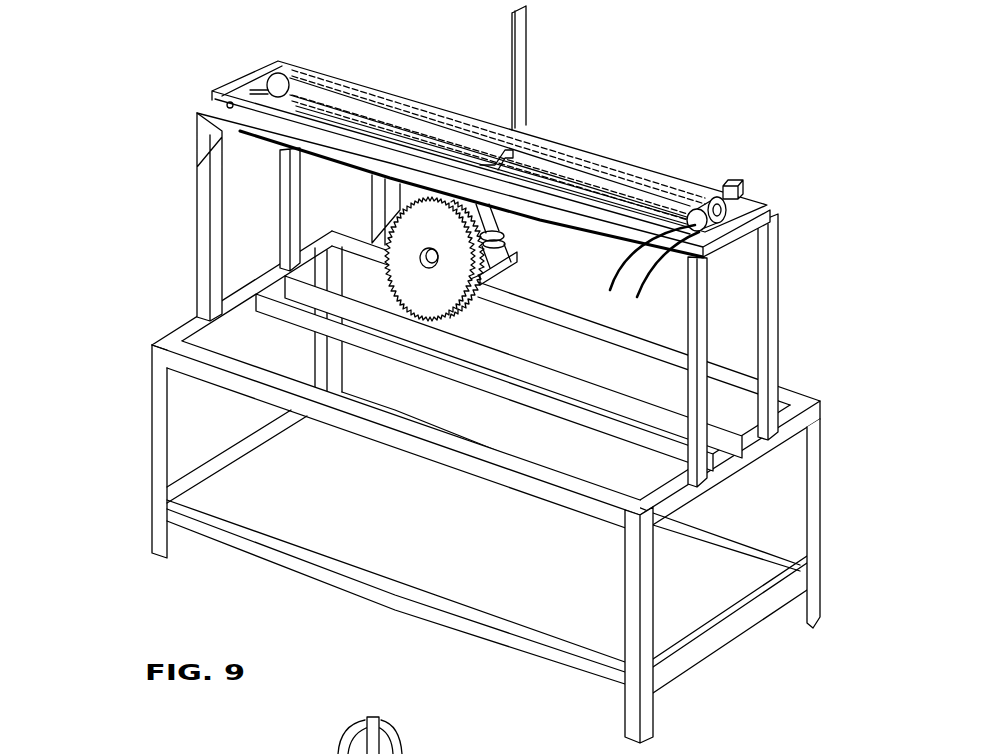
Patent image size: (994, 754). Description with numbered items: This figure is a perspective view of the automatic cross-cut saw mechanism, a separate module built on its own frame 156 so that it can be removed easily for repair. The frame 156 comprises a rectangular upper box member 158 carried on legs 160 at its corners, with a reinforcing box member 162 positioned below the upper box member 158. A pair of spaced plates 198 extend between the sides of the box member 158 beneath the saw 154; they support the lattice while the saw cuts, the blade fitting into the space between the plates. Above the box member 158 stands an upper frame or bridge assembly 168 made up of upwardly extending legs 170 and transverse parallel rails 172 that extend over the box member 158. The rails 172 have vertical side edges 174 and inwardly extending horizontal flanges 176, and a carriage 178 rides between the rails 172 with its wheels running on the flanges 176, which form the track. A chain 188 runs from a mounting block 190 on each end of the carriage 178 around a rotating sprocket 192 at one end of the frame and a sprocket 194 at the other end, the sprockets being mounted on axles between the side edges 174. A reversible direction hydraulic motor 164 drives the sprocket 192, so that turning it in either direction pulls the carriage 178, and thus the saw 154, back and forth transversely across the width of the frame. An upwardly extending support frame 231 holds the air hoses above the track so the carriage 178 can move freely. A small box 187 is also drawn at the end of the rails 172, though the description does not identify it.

The saw blade 154 is at (425, 292).
The lower table frame 156 is at (152, 423).
The front rail 158 is at (407, 442).
The table legs 160 is at (817, 488).
The shelf side rail 162 is at (735, 633).
The top bar of upper frame 164 is at (773, 212).
The upper frame 168 is at (783, 263).
The upper frame posts 170 is at (195, 229).
The conveyor assembly 172 is at (633, 157).
The end plate 174 is at (740, 210).
The conveyor rail 176 is at (583, 173).
The conveyor plate 178 is at (427, 137).
The switch box 187 is at (732, 178).
The chain guide 188 is at (528, 167).
The chains 190 is at (393, 128).
The sprocket 192 is at (705, 195).
The roller 194 is at (287, 76).
The cross rails 198 is at (527, 370).
The vertical post 231 is at (520, 80).